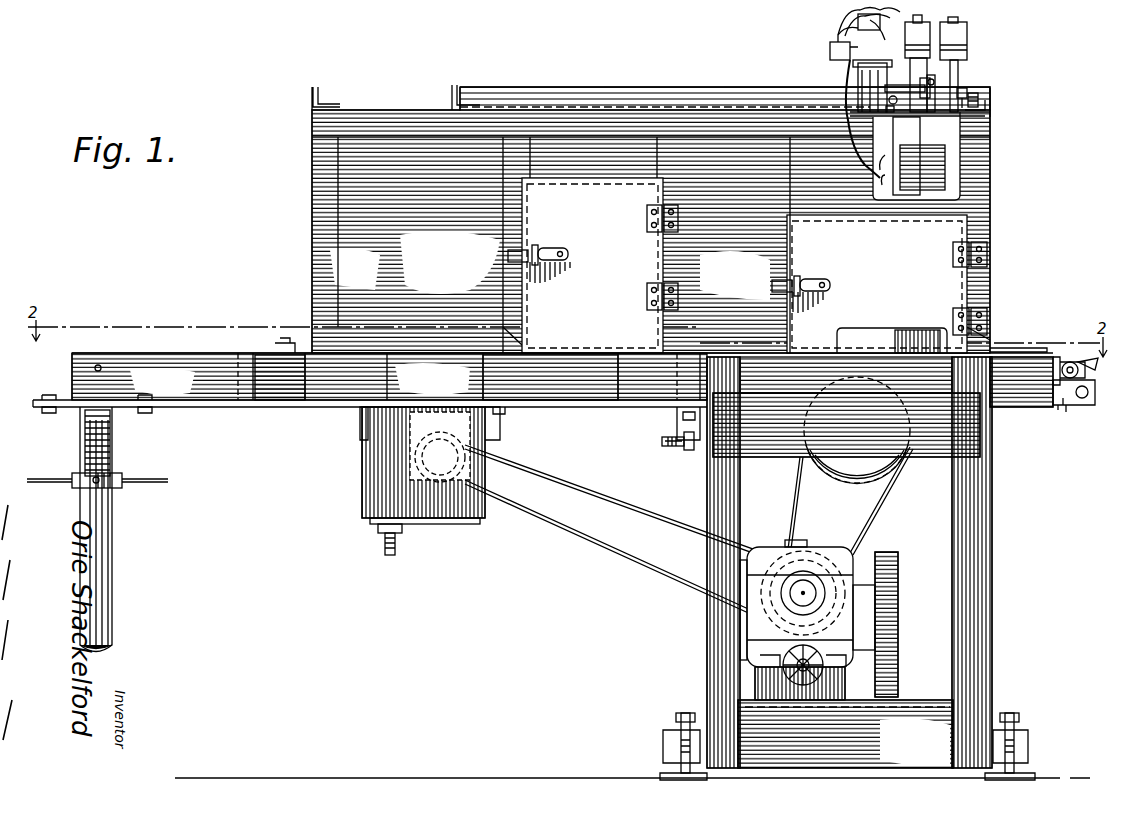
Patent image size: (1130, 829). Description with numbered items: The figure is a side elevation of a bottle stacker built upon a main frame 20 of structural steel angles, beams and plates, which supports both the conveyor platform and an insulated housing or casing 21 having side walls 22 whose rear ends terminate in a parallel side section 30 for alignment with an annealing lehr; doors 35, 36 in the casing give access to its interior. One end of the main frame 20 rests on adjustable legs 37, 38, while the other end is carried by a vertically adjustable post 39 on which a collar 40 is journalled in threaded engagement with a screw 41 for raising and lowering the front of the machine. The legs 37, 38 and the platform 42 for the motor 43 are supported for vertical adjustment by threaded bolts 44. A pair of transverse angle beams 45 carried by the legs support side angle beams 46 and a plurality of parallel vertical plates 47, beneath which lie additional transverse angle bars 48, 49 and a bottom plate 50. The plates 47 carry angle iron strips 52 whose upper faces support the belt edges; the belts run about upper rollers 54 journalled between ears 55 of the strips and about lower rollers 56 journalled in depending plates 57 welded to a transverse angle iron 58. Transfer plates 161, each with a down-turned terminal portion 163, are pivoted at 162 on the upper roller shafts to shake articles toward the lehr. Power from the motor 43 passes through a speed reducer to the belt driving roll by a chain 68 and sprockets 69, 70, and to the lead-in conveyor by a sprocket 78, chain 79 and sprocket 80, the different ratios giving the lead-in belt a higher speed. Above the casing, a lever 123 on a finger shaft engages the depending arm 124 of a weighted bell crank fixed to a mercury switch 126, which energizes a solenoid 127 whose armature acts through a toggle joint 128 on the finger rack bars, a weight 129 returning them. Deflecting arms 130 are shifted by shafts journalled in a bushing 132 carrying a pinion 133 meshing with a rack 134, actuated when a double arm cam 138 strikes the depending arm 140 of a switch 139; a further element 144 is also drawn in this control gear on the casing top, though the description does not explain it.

The insulated housing or casing 21 is at (375, 101).
The side wall 22 is at (465, 160).
The door 35 is at (583, 196).
The door 36 is at (945, 283).
The parallel side section 30 is at (815, 150).
The mercury switch 126 is at (845, 16).
The depending arm of bell crank lever 124 is at (845, 47).
The mercury switch 139 is at (858, 66).
The depending arm 140 is at (852, 97).
The lever 123 is at (893, 96).
The double arm cam 138 is at (890, 112).
The solenoid 144 is at (958, 33).
The weight 129 is at (912, 46).
The toggle joint 128 is at (932, 80).
The pinion 133 is at (968, 88).
The bushing 132 is at (978, 98).
The rack 134 is at (975, 117).
The solenoid 127 is at (925, 172).
The deflecting arm 130 is at (1000, 345).
The down-turned terminal portion 163 is at (1058, 355).
The transfer plate 161 is at (1078, 360).
The angle iron strip 52 is at (1066, 362).
The upper roller 54 is at (1080, 360).
The pivot 162 is at (1086, 390).
The extension or ear 55 is at (1075, 399).
The lower roller 56 is at (1064, 405).
The transverse angle iron 58 is at (1059, 410).
The depending plate 57 is at (1066, 412).
The side angle beam 46 is at (1025, 408).
The screw 41 is at (88, 444).
The collar 40 is at (120, 478).
The vertically adjustable post 39 is at (105, 600).
The bottom plate 50 is at (278, 403).
The main frame 20 is at (328, 392).
The transverse angle bar 49 is at (362, 422).
The transverse angle bar 48 is at (500, 433).
The parallel vertical plate 47 is at (563, 393).
The transverse angle beam 45 is at (688, 410).
The sprocket 80 is at (437, 522).
The chain 79 is at (582, 540).
The chain 68 is at (796, 495).
The sprocket 70 is at (830, 477).
The sprocket 78 is at (775, 565).
The sprocket 69 is at (838, 562).
The motor 43 is at (870, 556).
The adjustable leg 37 is at (708, 632).
The adjustable leg 38 is at (975, 598).
The platform 42 is at (905, 700).
The threaded bolt 44 is at (672, 745).